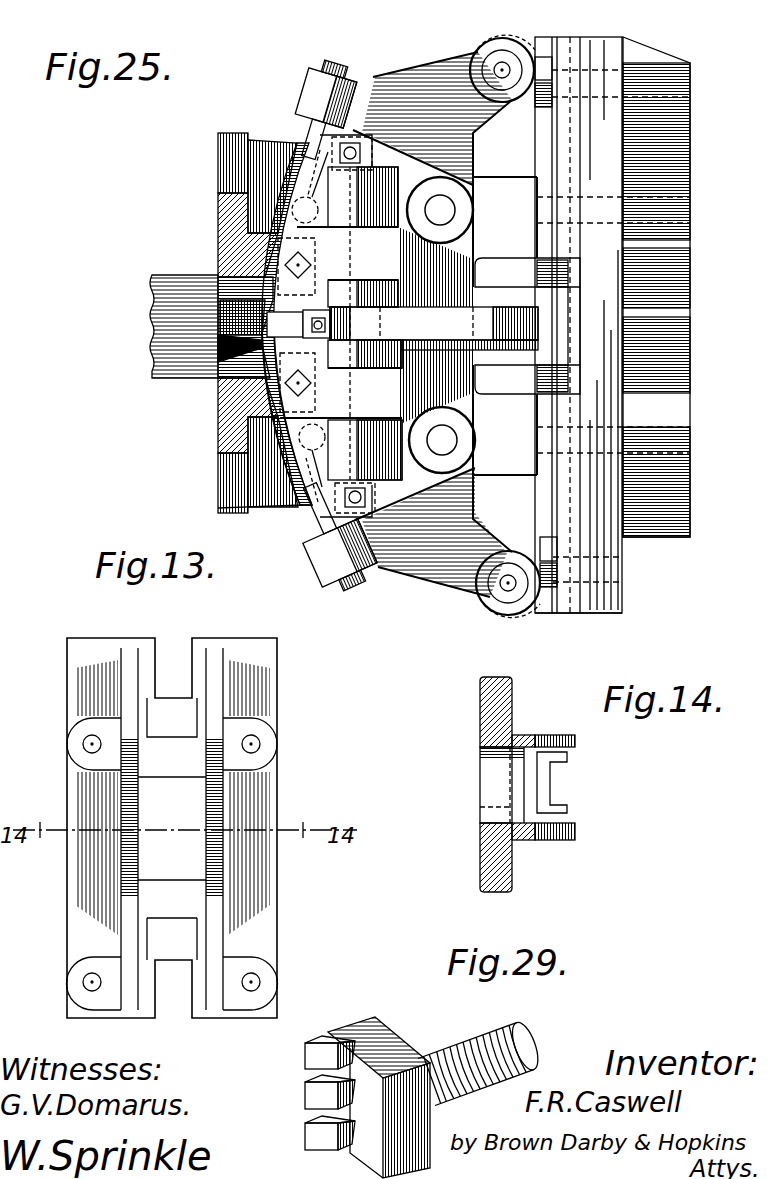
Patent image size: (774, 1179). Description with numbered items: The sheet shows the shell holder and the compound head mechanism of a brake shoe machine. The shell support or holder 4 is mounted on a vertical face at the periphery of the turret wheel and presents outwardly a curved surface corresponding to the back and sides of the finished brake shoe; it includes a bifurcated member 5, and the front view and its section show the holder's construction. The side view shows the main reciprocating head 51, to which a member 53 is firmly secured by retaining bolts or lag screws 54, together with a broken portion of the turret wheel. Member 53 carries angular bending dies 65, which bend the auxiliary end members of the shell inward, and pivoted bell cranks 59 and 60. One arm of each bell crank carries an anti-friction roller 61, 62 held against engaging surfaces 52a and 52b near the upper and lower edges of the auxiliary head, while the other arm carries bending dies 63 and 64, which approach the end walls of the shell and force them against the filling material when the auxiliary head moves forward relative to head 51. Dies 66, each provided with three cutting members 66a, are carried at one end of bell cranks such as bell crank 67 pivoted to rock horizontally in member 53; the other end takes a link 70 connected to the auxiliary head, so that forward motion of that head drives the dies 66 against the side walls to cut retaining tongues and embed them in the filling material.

In FIG. 25, the shell support or holder 4 is at (237, 157).
In FIG. 13, the shell support or holder 4 is at (255, 695).
In FIG. 14, the shell support or holder 4 is at (492, 725).
In FIG. 25, the bifurcated member 5 is at (165, 288).
In FIG. 25, the main reciprocating head 51 is at (670, 93).
In FIG. 25, the engaging surface 52a is at (537, 53).
In FIG. 25, the engaging surface 52b is at (538, 612).
In FIG. 25, the member 53 is at (490, 193).
In FIG. 25, the retaining bolts or lag screws 54 is at (545, 90).
In FIG. 25, the bell crank 59 is at (380, 98).
In FIG. 25, the bell crank 60 is at (450, 567).
In FIG. 25, the anti-friction roller 61 is at (495, 46).
In FIG. 25, the anti-friction roller 62 is at (517, 595).
In FIG. 25, the bending die 63 is at (302, 125).
In FIG. 25, the bending die 64 is at (322, 520).
In FIG. 25, the angular bending die 65 is at (311, 326).
In FIG. 25, the die 66 is at (326, 254).
In FIG. 29, the die 66 is at (372, 1030).
In FIG. 29, the cutting member 66a is at (317, 1053).
In FIG. 25, the bell crank 67 is at (292, 266).
In FIG. 25, the link 70 is at (402, 328).